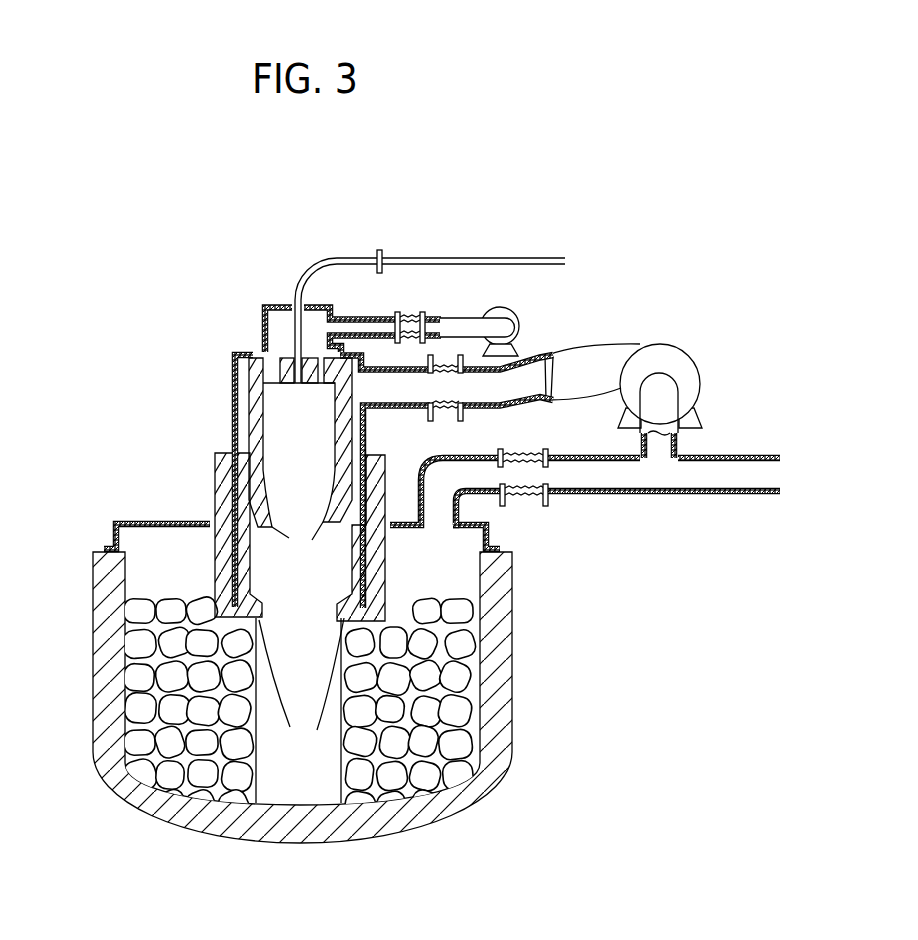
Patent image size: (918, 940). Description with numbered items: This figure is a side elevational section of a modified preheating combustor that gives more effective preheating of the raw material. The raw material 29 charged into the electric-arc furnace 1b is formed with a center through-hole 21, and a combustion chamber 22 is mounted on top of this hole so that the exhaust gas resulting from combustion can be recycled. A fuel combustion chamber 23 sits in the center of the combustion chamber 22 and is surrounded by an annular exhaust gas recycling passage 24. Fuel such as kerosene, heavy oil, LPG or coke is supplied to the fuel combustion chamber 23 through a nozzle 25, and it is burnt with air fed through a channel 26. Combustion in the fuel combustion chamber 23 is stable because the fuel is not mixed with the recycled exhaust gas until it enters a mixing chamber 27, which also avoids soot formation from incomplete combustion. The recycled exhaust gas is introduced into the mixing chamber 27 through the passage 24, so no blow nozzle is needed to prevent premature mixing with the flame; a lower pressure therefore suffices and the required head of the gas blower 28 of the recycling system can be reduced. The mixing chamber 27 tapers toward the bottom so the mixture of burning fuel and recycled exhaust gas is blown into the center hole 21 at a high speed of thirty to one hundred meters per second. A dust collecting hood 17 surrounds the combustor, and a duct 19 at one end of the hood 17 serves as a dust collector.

The electric-arc furnace shell 1b is at (92, 709).
The dust collecting hood 17 is at (163, 520).
The duct 19 is at (472, 492).
The center through-hole 21 is at (303, 773).
The combustion chamber 22 is at (294, 470).
The fuel combustion chamber 23 is at (278, 435).
The annular exhaust gas recycling passage 24 is at (356, 430).
The nozzle 25 is at (308, 278).
The channel 26 is at (313, 315).
The mixing chamber 27 is at (332, 575).
The gas blower 28 is at (657, 355).
The raw material 29 is at (140, 655).